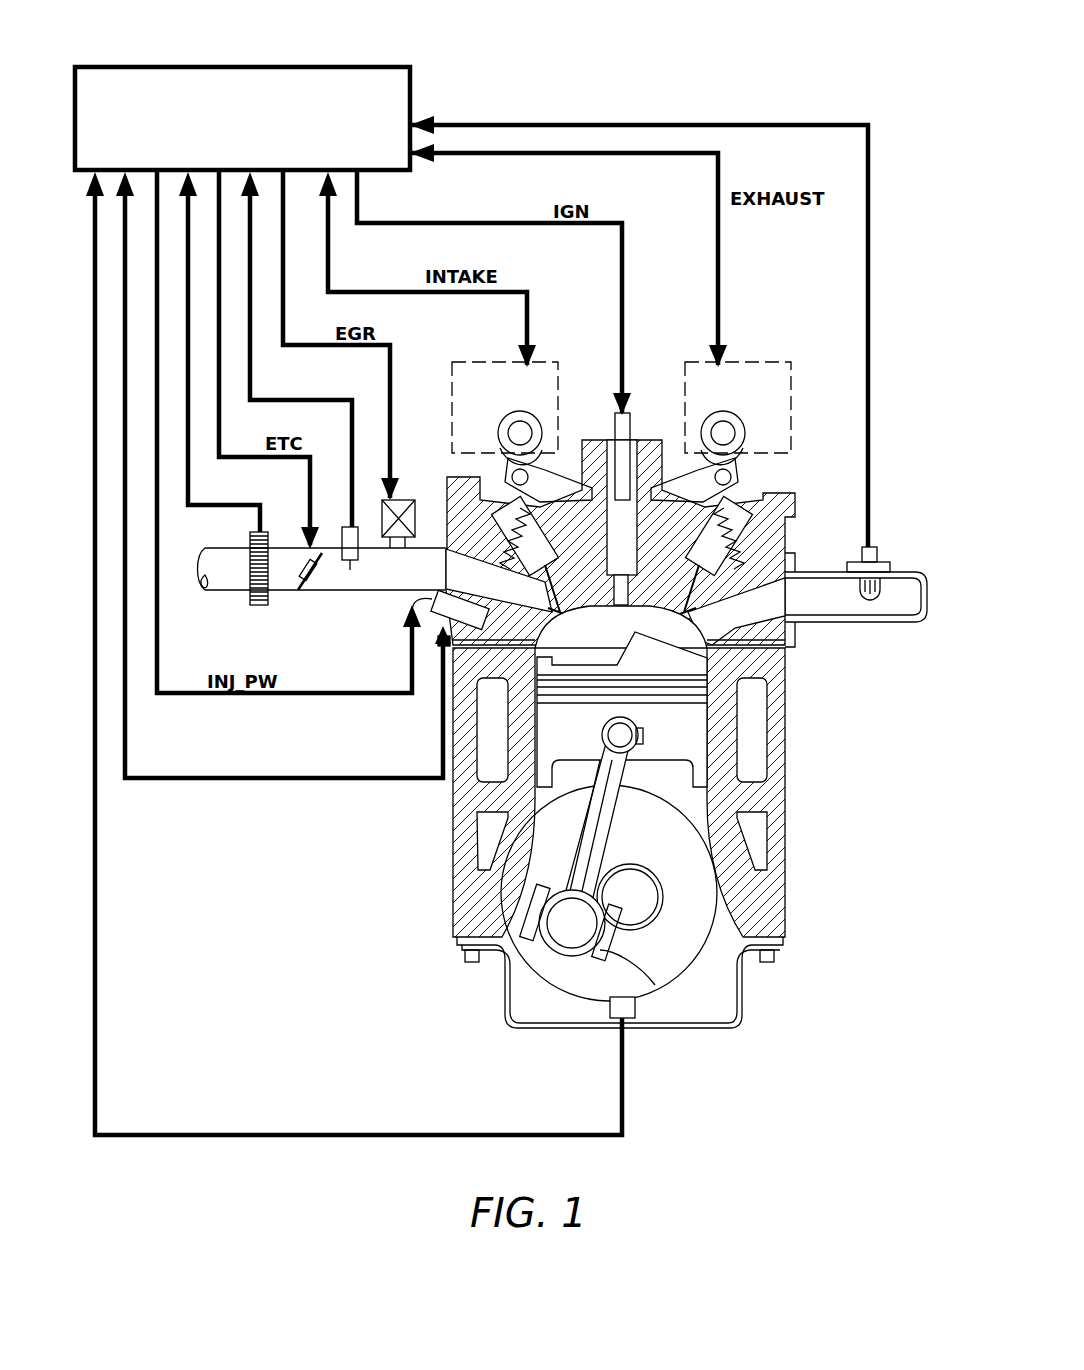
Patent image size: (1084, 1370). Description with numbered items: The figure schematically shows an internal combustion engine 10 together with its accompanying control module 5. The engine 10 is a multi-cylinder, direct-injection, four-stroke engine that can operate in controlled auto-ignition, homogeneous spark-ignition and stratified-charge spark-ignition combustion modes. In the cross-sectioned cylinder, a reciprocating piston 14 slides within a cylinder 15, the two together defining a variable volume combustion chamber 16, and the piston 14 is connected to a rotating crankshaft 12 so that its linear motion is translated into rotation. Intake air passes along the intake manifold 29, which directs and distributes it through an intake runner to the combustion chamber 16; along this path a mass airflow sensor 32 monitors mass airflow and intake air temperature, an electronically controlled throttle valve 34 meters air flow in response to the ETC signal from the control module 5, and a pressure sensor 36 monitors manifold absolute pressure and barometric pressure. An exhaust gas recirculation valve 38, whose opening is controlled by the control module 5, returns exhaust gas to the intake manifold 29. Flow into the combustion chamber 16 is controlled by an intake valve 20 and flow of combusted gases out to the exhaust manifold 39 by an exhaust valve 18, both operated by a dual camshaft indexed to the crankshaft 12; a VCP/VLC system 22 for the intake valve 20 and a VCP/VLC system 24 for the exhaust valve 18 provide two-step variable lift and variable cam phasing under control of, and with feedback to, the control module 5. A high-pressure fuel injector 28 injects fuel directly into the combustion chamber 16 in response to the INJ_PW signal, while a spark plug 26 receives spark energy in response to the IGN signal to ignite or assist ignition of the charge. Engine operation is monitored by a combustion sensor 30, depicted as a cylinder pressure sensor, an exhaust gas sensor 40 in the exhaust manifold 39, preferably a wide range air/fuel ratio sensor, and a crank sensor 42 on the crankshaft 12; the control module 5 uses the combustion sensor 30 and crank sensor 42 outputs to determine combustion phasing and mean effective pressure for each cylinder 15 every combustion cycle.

The control module 5 is at (206, 66).
The internal combustion engine 10 is at (642, 690).
The crankshaft 12 is at (680, 955).
The piston 14 is at (688, 752).
The cylinder 15 is at (710, 663).
The combustion chamber 16 is at (596, 656).
The exhaust valve 18 is at (700, 611).
The intake valve 20 is at (535, 598).
The VCP/VLC system for the intake valves 22 is at (548, 363).
The VCP/VLC system for the exhaust valves 24 is at (785, 425).
The spark plug 26 is at (632, 420).
The fuel injector 28 is at (405, 607).
The intake manifold 29 is at (428, 555).
The combustion sensor 30 is at (443, 680).
The mass airflow sensor 32 is at (258, 605).
The throttle valve 34 is at (310, 588).
The pressure sensor 36 is at (348, 565).
The exhaust gas recirculation valve 38 is at (392, 548).
The exhaust manifold 39 is at (773, 595).
The exhaust gas sensor 40 is at (870, 556).
The crank sensor 42 is at (605, 1012).